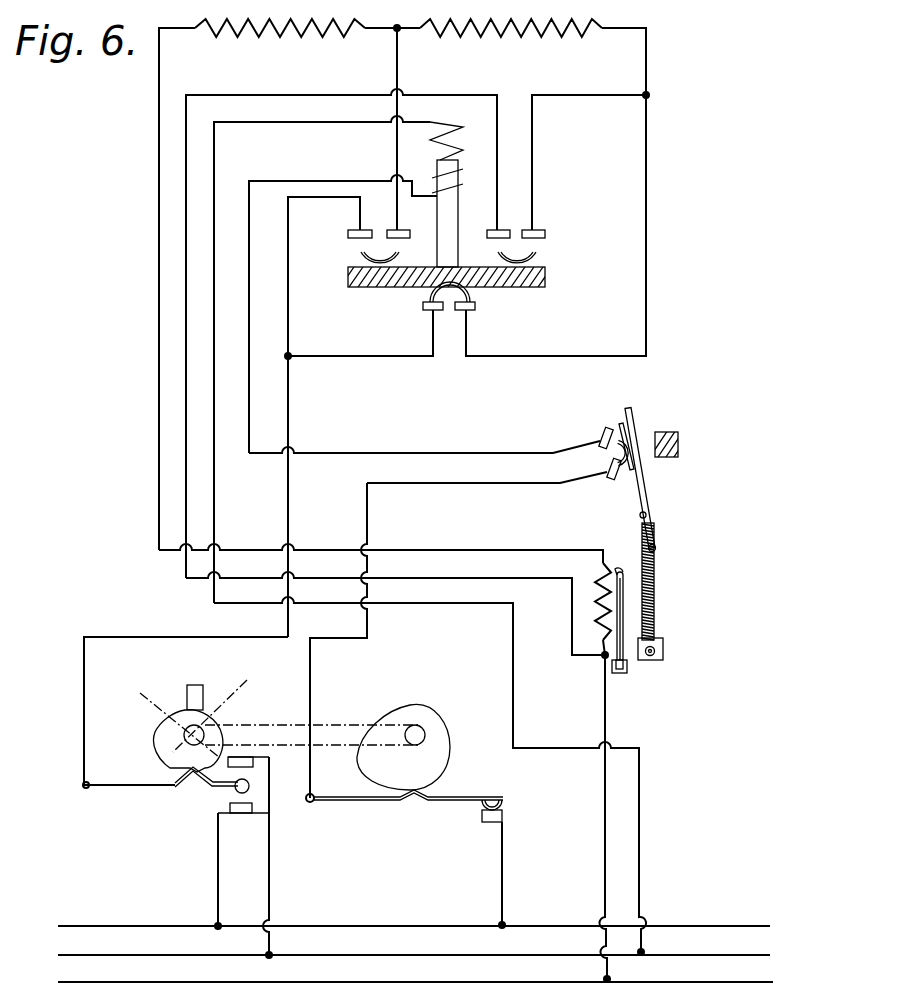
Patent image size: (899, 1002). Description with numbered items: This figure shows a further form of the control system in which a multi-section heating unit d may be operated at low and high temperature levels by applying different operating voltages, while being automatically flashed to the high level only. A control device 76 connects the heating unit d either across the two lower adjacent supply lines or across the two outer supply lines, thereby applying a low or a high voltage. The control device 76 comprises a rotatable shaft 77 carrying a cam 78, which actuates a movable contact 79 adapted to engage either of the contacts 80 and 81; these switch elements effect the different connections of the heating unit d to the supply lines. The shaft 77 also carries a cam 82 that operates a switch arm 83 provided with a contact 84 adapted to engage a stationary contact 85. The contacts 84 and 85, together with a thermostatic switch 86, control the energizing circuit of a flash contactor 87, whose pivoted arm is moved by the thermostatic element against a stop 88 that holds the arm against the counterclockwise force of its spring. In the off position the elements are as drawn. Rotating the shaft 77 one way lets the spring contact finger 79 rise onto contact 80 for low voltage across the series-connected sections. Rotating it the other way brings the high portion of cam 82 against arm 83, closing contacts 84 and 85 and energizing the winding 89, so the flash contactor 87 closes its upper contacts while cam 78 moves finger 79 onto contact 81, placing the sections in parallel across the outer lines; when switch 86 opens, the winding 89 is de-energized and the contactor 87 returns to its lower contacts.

The multi-section heating unit d is at (443, 33).
The winding 89 is at (454, 143).
The flash contactor 87 is at (461, 206).
The stop 88 is at (677, 433).
The thermostatic switch 86 is at (641, 541).
The control device 76 is at (264, 708).
The rotatable shaft 77 is at (341, 723).
The cam 78 is at (185, 722).
The movable contact 79 is at (180, 792).
The contact 80 is at (252, 768).
The contact 81 is at (252, 814).
The cam 82 is at (440, 725).
The switch arm 83 is at (465, 797).
The contact 84 is at (505, 801).
The stationary contact 85 is at (503, 815).